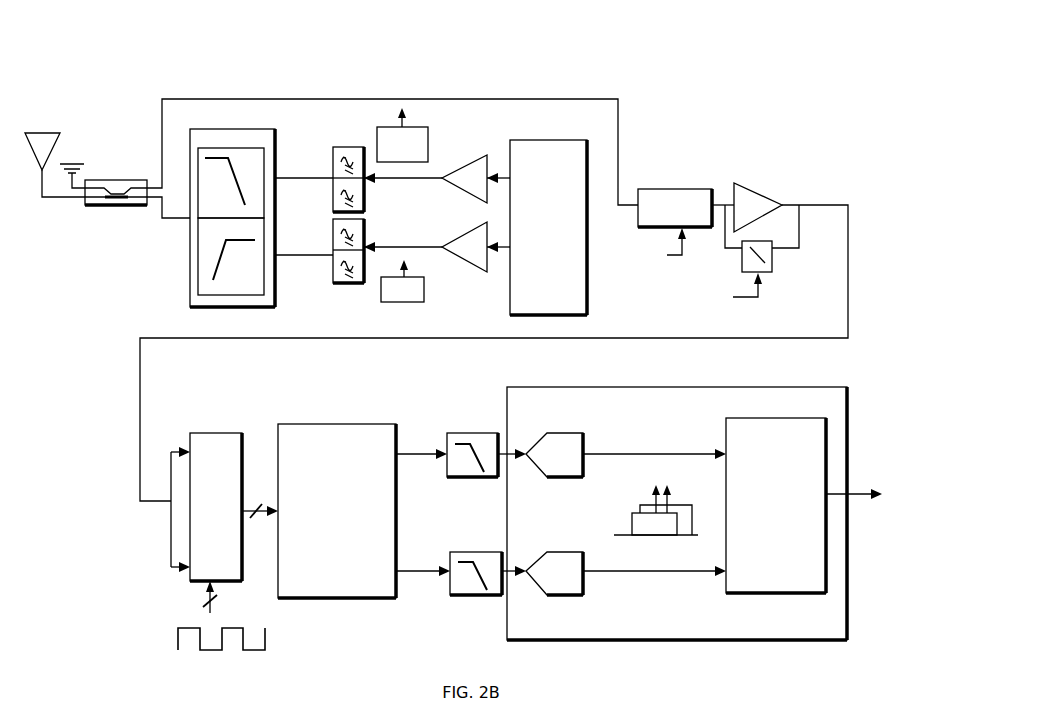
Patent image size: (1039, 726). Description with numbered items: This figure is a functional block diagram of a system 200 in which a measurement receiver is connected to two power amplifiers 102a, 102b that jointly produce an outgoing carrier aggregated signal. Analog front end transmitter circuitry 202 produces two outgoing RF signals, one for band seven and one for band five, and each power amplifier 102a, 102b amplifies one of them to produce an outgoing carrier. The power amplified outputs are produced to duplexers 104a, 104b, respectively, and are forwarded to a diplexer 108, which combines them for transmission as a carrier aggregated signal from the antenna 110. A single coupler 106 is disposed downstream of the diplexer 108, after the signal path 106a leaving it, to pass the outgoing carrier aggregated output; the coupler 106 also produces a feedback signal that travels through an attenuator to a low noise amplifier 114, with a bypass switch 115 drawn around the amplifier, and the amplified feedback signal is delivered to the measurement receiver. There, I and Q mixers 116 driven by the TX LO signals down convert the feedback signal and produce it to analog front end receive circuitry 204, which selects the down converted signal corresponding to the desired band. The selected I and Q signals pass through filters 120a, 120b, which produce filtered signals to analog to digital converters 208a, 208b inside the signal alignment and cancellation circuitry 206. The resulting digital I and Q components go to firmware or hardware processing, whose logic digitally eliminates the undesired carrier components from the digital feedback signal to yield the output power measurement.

The transceiver system 200 is at (770, 60).
The antenna 110 is at (36, 133).
The coupler 106 is at (134, 180).
The coupler output line 106a is at (304, 150).
The diplexer 108 is at (228, 129).
The duplexer 104a is at (343, 147).
The duplexer 104b is at (351, 283).
The power amplifier 102a is at (474, 161).
The power amplifier 102b is at (471, 270).
The analog front end transmitter circuitry 202 is at (558, 141).
The low noise amplifier 114 is at (752, 187).
The LNA bypass switch 115 is at (773, 261).
The mixers 116 is at (210, 433).
The analog front end receive circuitry 204 is at (312, 424).
The filter 120a is at (477, 433).
The filter 120b is at (486, 552).
The I analog to digital converter 208a is at (568, 433).
The Q analog to digital converter 208b is at (567, 552).
The signal alignment and cancellation circuitry 206 is at (818, 387).